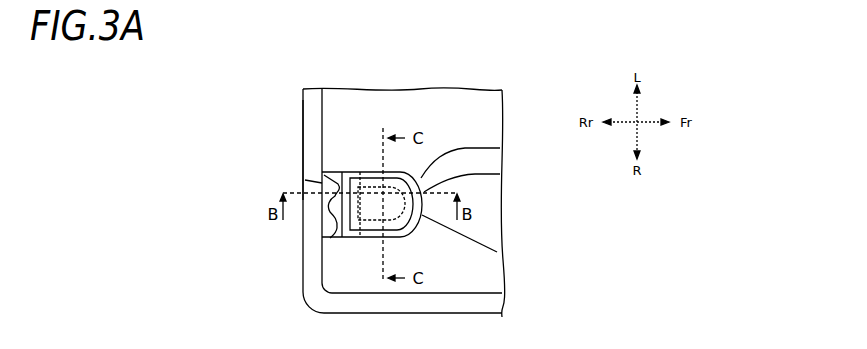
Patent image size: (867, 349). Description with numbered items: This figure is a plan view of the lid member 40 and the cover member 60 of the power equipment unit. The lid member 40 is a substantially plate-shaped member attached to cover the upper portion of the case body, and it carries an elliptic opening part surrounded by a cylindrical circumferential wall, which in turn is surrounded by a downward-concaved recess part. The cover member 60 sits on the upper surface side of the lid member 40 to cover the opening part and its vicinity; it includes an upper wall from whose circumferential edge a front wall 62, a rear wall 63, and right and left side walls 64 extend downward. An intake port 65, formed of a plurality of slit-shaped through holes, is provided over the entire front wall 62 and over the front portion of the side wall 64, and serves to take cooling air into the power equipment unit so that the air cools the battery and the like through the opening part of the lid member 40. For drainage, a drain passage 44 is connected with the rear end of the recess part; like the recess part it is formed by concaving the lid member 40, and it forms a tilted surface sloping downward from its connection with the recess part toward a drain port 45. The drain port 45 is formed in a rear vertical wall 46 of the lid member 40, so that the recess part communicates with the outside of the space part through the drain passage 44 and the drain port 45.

The lid member 40 is at (398, 168).
The drain passage 44 is at (340, 171).
The drain port 45 is at (305, 180).
The rear vertical wall 46 is at (303, 127).
The cover member 60 is at (500, 148).
The front wall 62 is at (500, 174).
The rear wall 63 is at (320, 215).
The side wall 64 is at (363, 171).
The intake port 65 is at (497, 252).